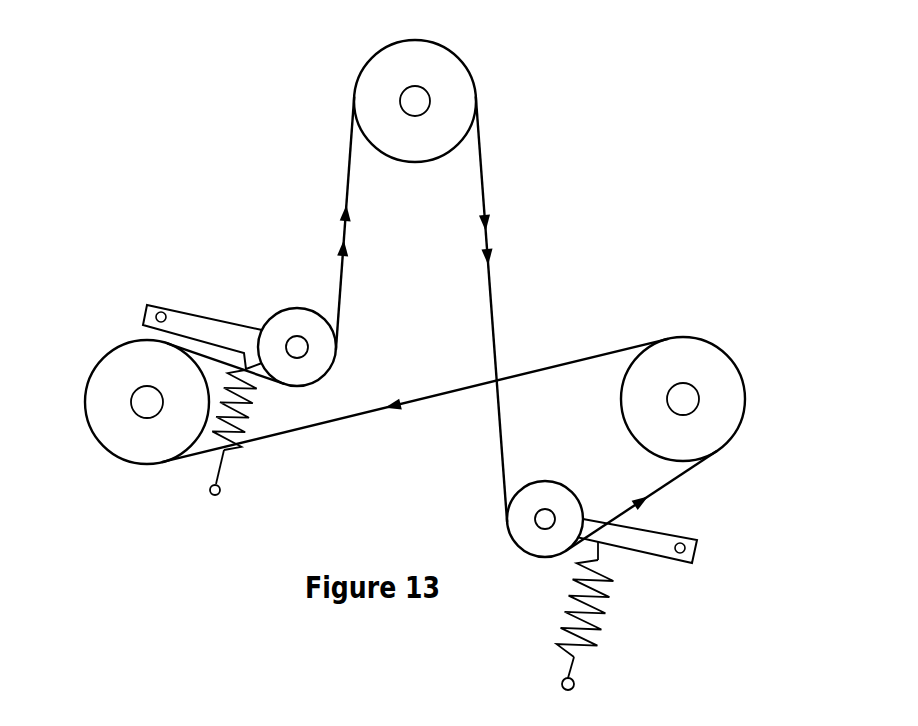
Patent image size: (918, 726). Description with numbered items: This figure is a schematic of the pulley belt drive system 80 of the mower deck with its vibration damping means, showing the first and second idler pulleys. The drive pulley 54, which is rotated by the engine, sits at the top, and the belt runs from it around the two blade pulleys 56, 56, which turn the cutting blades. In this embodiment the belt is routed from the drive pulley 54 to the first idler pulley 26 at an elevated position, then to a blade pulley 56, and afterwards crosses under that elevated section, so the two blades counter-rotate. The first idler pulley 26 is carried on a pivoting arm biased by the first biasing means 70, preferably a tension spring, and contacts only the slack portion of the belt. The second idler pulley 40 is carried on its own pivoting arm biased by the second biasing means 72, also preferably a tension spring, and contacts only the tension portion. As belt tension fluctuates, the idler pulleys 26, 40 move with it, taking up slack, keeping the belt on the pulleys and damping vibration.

The drive pulley 54 is at (452, 73).
The blade pulley 56 is at (98, 398).
The second idler pulley 40 is at (282, 322).
The first idler pulley 26 is at (530, 498).
The pulley/belt drive system 80 is at (542, 227).
The first biasing means 70 is at (597, 600).
The second biasing means 72 is at (227, 453).